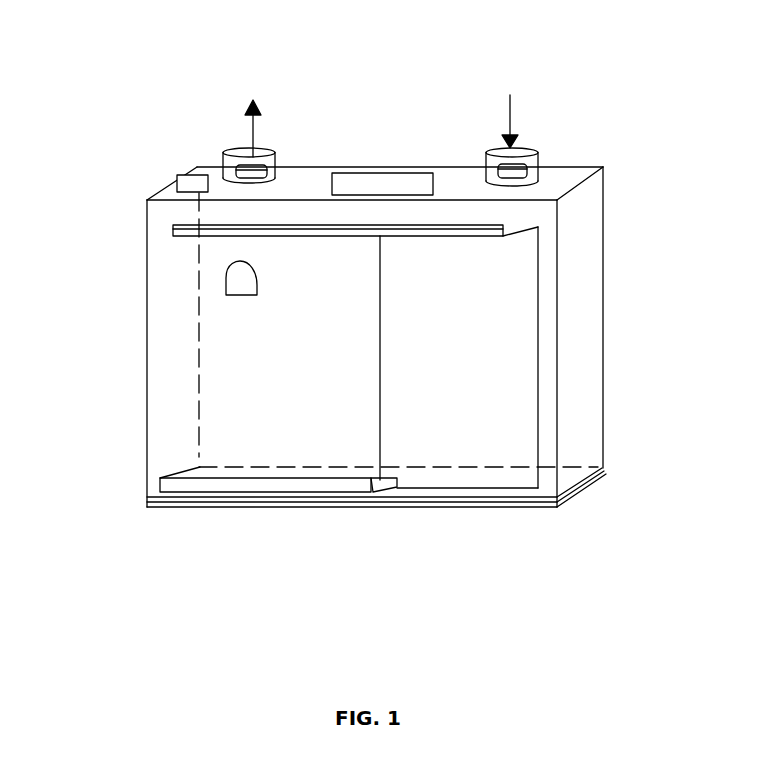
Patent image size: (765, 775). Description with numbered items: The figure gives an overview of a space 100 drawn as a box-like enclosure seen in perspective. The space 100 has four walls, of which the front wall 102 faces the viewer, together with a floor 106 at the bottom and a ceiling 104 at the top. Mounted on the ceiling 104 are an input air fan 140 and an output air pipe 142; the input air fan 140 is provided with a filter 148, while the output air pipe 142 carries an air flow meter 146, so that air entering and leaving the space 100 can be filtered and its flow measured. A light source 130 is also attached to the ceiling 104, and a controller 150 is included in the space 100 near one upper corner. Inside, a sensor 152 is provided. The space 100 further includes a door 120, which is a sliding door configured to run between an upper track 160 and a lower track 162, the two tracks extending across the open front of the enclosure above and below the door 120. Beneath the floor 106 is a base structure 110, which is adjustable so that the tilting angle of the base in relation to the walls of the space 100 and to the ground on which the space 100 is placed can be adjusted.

The space 100 is at (122, 52).
The front wall 102 is at (147, 230).
The ceiling 104 is at (566, 167).
The floor 106 is at (575, 475).
The base structure 110 is at (172, 503).
The door 120 is at (538, 298).
The light source 130 is at (374, 172).
The input air fan 140 is at (487, 155).
The output air pipe 142 is at (226, 152).
The air flow meter 146 is at (263, 158).
The filter 148 is at (527, 158).
The controller 150 is at (177, 184).
The sensor 152 is at (226, 289).
The upper track 160 is at (494, 225).
The lower track 162 is at (158, 489).